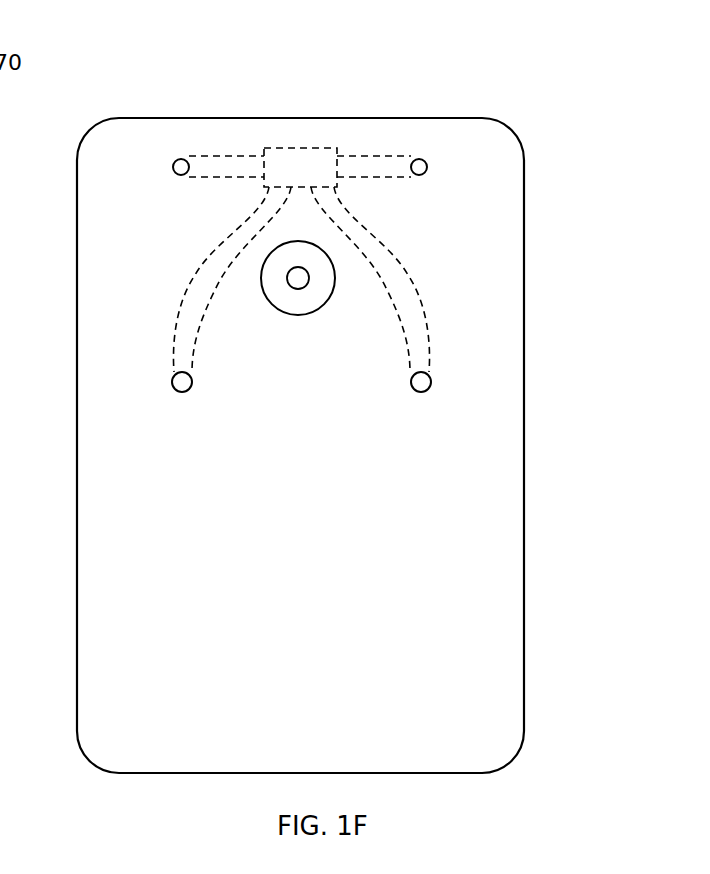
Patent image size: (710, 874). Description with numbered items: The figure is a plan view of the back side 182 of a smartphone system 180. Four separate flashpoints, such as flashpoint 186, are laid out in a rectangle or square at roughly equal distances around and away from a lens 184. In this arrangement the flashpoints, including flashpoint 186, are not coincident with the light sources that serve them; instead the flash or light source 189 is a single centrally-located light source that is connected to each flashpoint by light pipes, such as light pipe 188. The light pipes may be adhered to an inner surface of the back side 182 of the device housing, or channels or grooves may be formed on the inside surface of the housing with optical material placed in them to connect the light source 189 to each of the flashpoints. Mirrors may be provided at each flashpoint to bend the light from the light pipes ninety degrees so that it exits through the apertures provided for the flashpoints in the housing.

The smartphone system 180 is at (337, 403).
The back side 182 is at (500, 348).
The lens 184 is at (297, 297).
The flashpoint 186 is at (427, 170).
The light pipe 188 is at (379, 167).
The light source 189 is at (301, 167).